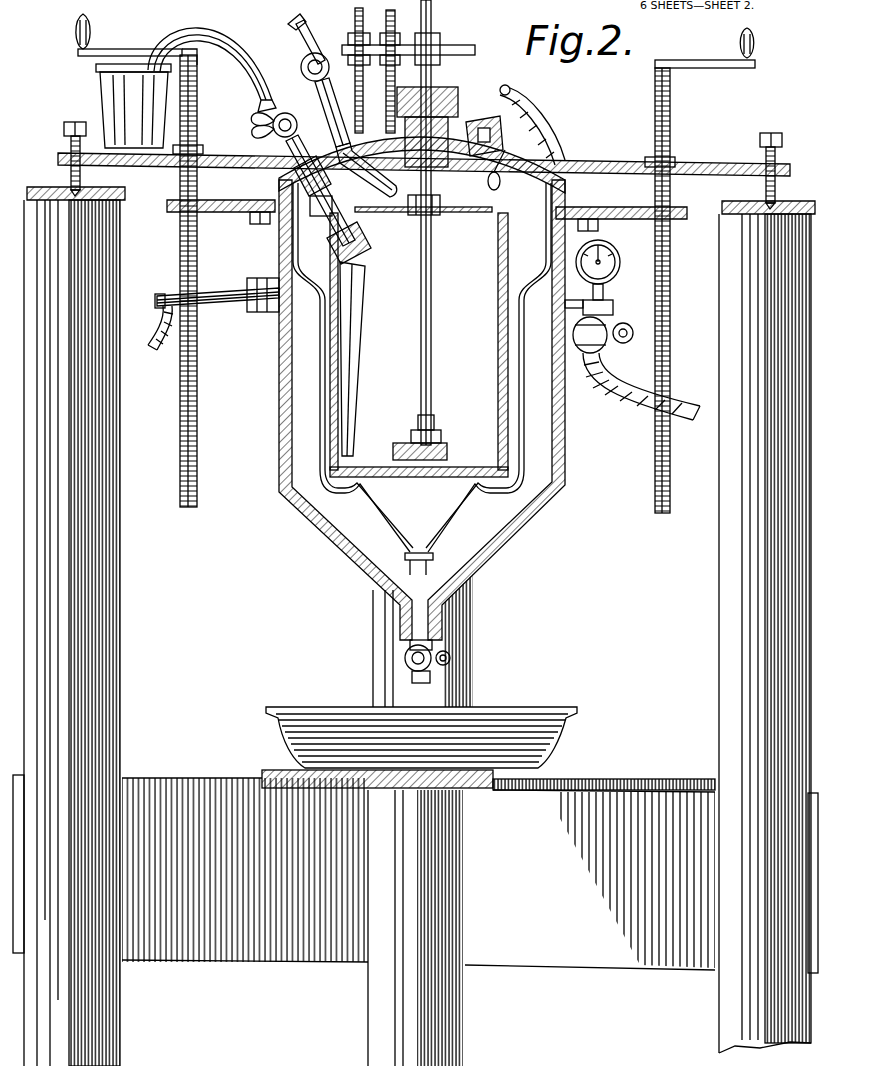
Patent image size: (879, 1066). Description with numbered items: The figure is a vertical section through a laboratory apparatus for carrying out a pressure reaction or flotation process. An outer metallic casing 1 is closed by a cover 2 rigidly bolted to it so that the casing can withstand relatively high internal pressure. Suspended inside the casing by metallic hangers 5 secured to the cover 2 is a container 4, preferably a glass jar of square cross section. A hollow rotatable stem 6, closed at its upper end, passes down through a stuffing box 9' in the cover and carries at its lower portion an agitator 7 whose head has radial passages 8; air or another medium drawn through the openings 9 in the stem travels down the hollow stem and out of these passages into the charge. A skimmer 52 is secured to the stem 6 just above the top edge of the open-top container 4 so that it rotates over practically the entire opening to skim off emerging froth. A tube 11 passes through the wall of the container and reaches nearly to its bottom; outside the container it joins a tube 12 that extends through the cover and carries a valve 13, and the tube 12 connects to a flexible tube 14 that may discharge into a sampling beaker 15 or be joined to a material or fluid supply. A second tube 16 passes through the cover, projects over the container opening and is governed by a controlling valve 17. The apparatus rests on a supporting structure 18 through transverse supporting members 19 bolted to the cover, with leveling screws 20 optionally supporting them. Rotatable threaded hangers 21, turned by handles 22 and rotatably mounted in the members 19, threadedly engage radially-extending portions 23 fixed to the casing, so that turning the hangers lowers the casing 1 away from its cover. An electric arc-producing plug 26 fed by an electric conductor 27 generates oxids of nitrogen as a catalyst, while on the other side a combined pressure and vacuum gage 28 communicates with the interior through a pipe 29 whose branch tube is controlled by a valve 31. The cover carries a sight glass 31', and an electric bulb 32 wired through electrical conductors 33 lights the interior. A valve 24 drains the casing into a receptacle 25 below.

The outer metallic casing 1 is at (279, 460).
The cover 2 is at (505, 168).
The container 4 is at (500, 347).
The metallic hangers 5 is at (526, 362).
The hollow rotatable stem 6 is at (429, 300).
The agitator 7 is at (432, 436).
The radial passages 8 is at (449, 452).
The openings 9 is at (433, 201).
The stuffing box 9' is at (415, 87).
The tube 11 is at (363, 357).
The tube 12 is at (278, 227).
The valve 13 is at (277, 120).
The flexible tube 14 is at (233, 32).
The sampling beaker 15 is at (113, 87).
The second tube 16 is at (397, 197).
The controlling valve 17 is at (325, 53).
The supporting structure 18 is at (120, 587).
The transverse supporting members 19 is at (153, 165).
The leveling screws 20 is at (70, 138).
The rotatable threaded hangers 21 is at (197, 383).
The handles 22 is at (110, 50).
The radially-extending portions 23 is at (685, 220).
The valve 24 is at (406, 662).
The receptacle 25 is at (498, 708).
The electric arc-producing plug 26 is at (273, 313).
The electric conductor 27 is at (160, 352).
The combined pressure and vacuum gage 28 is at (620, 272).
The pipe 29 is at (577, 356).
The valve 31 is at (600, 323).
The sight glass 31' is at (484, 125).
The electric bulb 32 is at (489, 177).
The electrical conductors 33 is at (527, 110).
The skimmer 52 is at (452, 213).